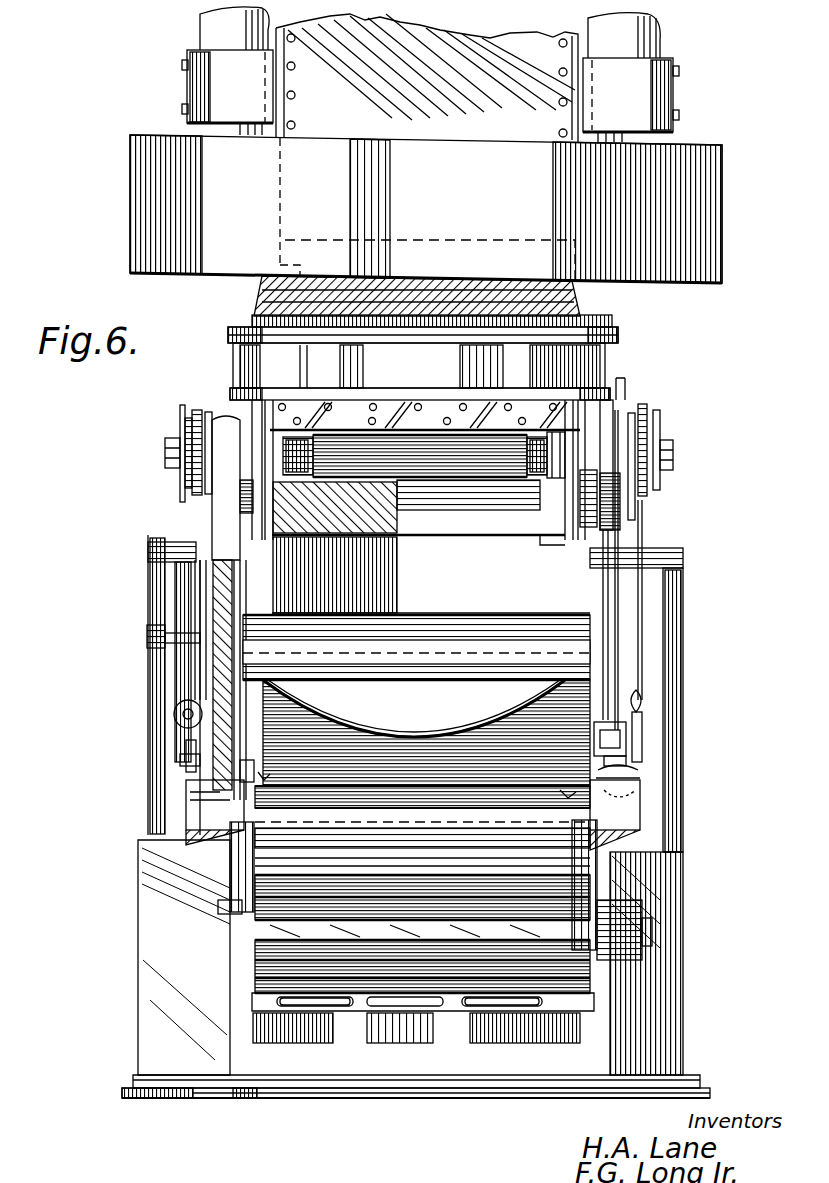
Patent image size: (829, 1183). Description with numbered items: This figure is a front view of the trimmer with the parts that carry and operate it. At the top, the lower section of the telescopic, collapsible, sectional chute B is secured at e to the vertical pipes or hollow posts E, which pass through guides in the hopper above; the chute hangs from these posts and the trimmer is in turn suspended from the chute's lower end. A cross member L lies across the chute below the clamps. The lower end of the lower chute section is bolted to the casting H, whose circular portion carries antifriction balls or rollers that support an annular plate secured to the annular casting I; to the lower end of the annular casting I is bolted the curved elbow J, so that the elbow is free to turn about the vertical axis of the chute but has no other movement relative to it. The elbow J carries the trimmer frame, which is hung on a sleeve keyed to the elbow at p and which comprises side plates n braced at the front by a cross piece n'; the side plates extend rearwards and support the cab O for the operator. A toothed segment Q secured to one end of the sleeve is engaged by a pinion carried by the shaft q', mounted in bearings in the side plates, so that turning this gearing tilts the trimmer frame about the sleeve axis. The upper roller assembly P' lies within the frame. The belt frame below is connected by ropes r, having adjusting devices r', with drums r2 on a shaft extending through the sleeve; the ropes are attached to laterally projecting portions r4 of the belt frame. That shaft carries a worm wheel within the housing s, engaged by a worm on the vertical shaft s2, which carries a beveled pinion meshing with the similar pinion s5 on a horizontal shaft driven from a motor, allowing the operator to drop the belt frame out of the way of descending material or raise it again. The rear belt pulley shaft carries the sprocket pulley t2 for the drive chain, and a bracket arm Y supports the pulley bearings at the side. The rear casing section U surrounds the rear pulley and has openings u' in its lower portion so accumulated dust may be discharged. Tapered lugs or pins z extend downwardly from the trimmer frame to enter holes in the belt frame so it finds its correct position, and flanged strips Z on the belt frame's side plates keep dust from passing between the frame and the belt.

The vertical pipes or hollow posts E is at (210, 22).
The securing point of lower chute section e is at (206, 98).
The telescopic, collapsible, sectional chute B is at (427, 78).
The beam L is at (148, 186).
The casting H is at (582, 312).
The annular casting I is at (236, 372).
The housing s is at (626, 398).
The upper roller P' is at (418, 470).
The keying location of sleeve p is at (313, 478).
The toothed segment Q is at (220, 420).
The drums r2 is at (185, 468).
The side plates n is at (423, 501).
The ropes r is at (409, 565).
The curved elbow J is at (572, 576).
The cross piece n' is at (497, 614).
The vertical shaft s2 is at (616, 580).
The shaft q' is at (148, 635).
The cab O is at (160, 1000).
The adjusting devices r' is at (409, 726).
The devices (tapered lugs or pins) z is at (184, 764).
The flanged strips Z is at (262, 776).
The laterally projecting portions r4 is at (186, 800).
The beveled pinion s5 is at (628, 792).
The bracket arm Y is at (246, 850).
The sprocket pulley t2 is at (646, 954).
The rear casing section U is at (412, 1008).
The openings u' is at (387, 1077).